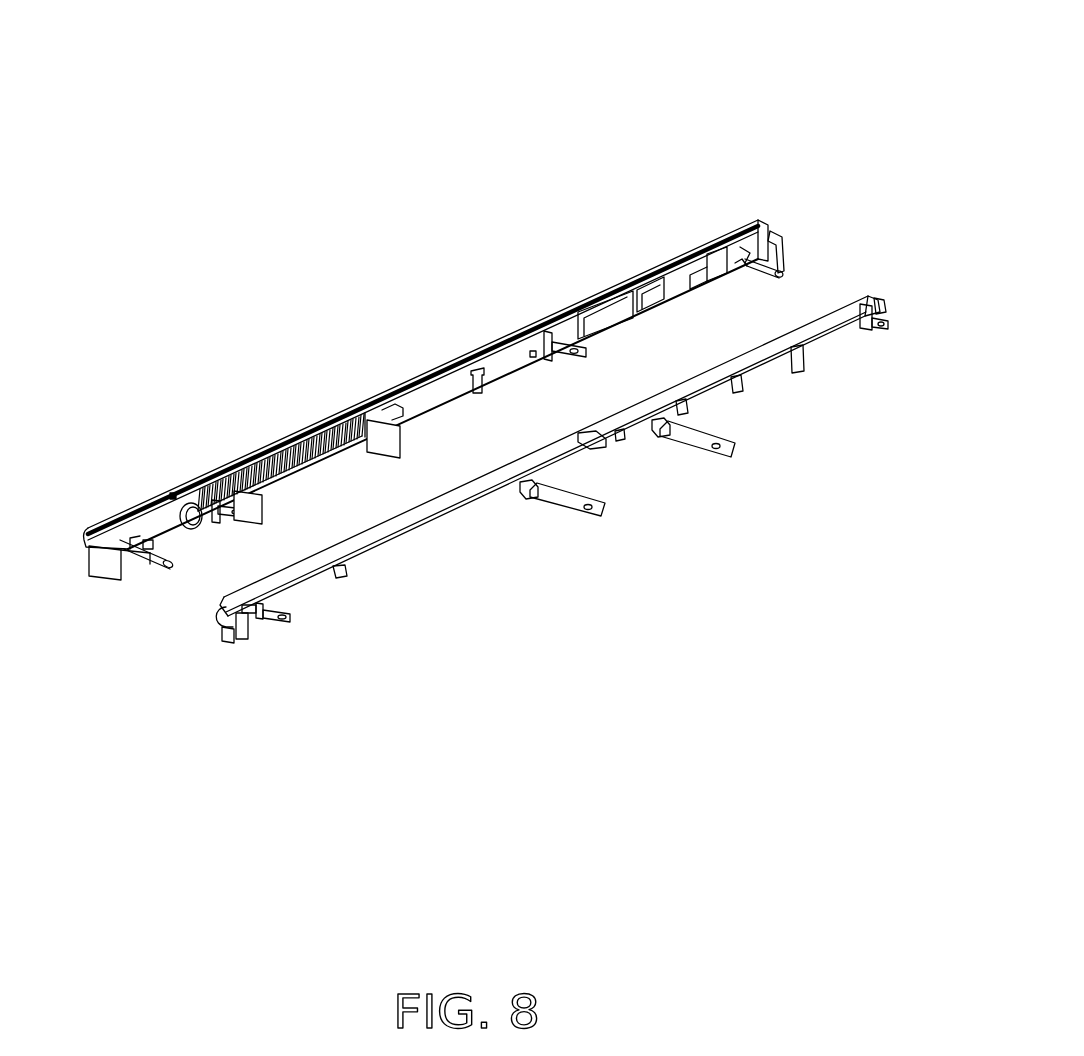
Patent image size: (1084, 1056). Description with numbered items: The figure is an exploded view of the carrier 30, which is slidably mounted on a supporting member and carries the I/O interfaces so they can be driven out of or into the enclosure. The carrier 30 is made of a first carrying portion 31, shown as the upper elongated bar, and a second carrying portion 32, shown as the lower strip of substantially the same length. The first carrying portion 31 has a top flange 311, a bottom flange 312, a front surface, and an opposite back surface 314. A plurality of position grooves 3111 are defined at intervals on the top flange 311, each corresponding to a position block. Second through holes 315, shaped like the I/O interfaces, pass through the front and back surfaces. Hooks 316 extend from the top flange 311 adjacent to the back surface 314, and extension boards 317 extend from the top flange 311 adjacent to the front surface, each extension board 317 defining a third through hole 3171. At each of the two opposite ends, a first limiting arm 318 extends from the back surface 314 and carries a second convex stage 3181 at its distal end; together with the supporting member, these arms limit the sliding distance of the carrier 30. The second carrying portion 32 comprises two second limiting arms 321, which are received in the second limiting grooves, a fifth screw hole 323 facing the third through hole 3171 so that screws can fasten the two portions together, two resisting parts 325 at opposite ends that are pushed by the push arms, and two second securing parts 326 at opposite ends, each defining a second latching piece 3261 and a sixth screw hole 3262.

The carrier 30 is at (586, 66).
The first carrying portion 31 is at (381, 385).
The top flange 311 is at (325, 432).
The position groove 3111 is at (173, 497).
The bottom flange 312 is at (295, 478).
The back surface 314 is at (438, 400).
The second through hole 315 is at (590, 316).
The hook 316 is at (670, 266).
The extension board 317 is at (565, 357).
The third through hole 3171 is at (590, 351).
The first limiting arm 318 is at (147, 563).
The second convex stage 3181 is at (167, 566).
The second carrying portion 32 is at (432, 543).
The second limiting arm 321 is at (560, 500).
The fifth screw hole 323 is at (341, 580).
The resisting part 325 is at (242, 629).
The second securing part 326 is at (893, 467).
The second latching piece 3261 is at (867, 330).
The sixth screw hole 3262 is at (884, 330).